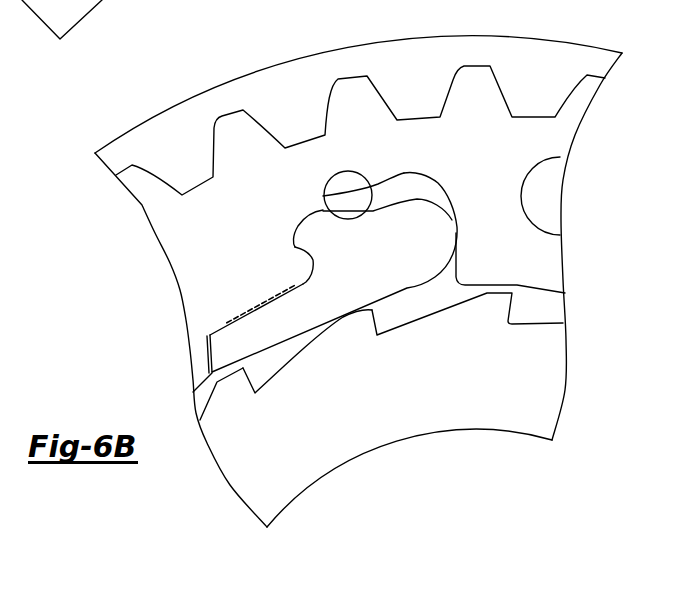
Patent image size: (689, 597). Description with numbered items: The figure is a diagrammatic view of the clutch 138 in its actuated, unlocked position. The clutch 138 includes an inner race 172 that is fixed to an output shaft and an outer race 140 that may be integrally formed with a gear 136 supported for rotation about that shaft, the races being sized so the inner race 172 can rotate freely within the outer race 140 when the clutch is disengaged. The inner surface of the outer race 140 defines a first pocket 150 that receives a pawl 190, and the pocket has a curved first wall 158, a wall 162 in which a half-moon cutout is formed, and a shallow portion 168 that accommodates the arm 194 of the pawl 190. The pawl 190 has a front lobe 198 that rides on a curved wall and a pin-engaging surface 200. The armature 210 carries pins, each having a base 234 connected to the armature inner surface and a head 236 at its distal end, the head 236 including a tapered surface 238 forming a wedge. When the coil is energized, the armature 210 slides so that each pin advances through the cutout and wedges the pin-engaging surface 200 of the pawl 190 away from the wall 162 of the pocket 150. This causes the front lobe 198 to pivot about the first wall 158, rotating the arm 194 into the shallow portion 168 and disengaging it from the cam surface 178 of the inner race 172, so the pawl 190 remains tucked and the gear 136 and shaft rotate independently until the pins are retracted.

The gear 136 is at (490, 92).
The clutch 138 is at (245, 75).
The outer race 140 is at (553, 143).
The first pocket 150 is at (425, 173).
The curved wall 158 is at (295, 247).
The wall of the pocket 162 is at (400, 174).
The shallow portion 168 is at (222, 332).
The inner race 172 is at (543, 377).
The cam surface 178 is at (295, 358).
The pawl 190 is at (403, 270).
The arm 194 is at (228, 347).
The front lobe 198 is at (308, 255).
The pin-engaging surface 200 is at (352, 218).
The armature 210 is at (552, 38).
The base 234 is at (372, 180).
The head 236 is at (337, 188).
The tapered surface 238 is at (335, 212).